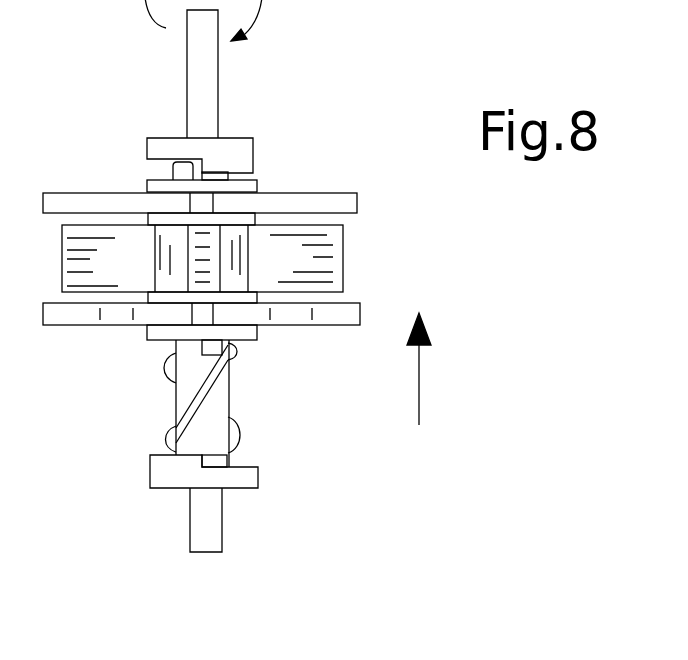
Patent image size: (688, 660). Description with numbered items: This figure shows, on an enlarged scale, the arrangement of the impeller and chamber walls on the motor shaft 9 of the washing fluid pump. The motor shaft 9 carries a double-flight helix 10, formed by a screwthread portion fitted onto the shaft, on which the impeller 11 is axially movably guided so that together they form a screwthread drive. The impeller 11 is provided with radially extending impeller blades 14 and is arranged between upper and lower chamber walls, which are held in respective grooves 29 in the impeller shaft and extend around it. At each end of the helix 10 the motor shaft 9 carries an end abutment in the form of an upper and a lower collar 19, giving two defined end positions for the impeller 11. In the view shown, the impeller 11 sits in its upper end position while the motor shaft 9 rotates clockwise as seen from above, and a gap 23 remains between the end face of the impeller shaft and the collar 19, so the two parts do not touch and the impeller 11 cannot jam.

The motor shaft 9 is at (208, 540).
The double-flight helix 10 is at (235, 375).
The impeller 11 is at (257, 259).
The impeller blades 14 is at (327, 263).
The collar 19 is at (243, 150).
The gap 23 is at (250, 177).
The groove 29 is at (143, 192).